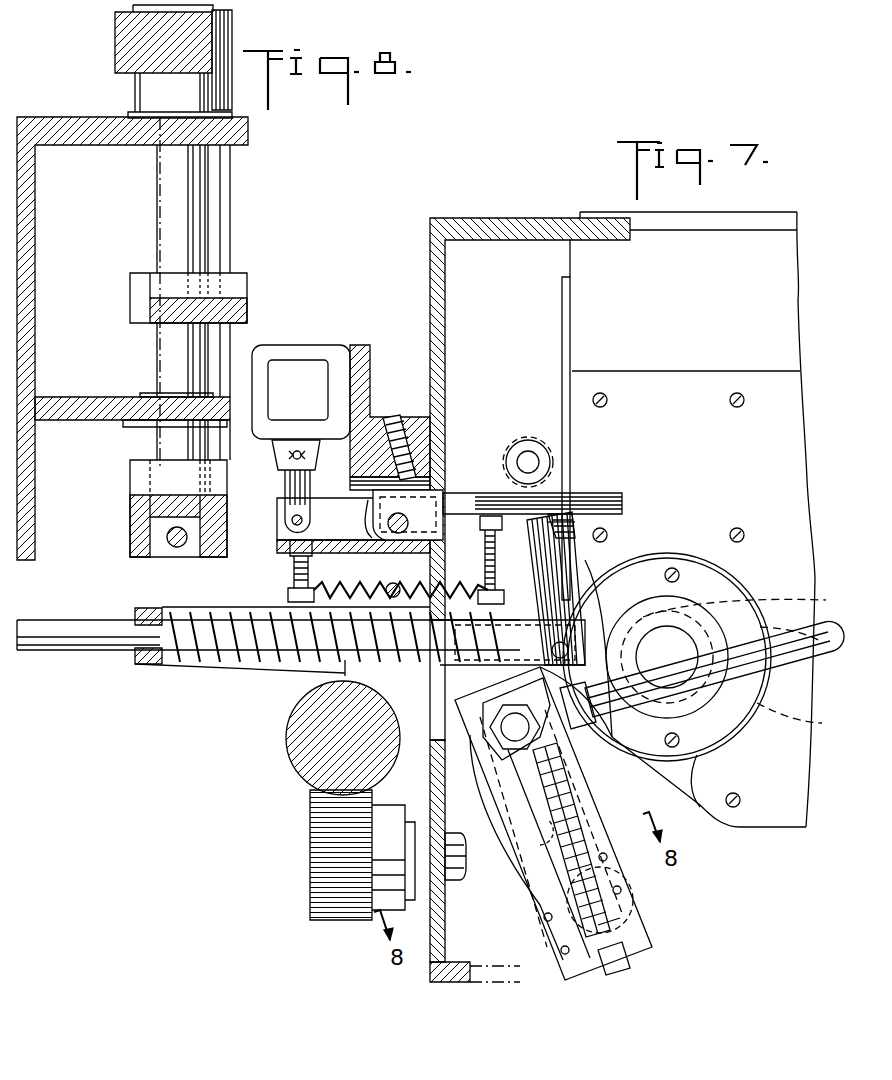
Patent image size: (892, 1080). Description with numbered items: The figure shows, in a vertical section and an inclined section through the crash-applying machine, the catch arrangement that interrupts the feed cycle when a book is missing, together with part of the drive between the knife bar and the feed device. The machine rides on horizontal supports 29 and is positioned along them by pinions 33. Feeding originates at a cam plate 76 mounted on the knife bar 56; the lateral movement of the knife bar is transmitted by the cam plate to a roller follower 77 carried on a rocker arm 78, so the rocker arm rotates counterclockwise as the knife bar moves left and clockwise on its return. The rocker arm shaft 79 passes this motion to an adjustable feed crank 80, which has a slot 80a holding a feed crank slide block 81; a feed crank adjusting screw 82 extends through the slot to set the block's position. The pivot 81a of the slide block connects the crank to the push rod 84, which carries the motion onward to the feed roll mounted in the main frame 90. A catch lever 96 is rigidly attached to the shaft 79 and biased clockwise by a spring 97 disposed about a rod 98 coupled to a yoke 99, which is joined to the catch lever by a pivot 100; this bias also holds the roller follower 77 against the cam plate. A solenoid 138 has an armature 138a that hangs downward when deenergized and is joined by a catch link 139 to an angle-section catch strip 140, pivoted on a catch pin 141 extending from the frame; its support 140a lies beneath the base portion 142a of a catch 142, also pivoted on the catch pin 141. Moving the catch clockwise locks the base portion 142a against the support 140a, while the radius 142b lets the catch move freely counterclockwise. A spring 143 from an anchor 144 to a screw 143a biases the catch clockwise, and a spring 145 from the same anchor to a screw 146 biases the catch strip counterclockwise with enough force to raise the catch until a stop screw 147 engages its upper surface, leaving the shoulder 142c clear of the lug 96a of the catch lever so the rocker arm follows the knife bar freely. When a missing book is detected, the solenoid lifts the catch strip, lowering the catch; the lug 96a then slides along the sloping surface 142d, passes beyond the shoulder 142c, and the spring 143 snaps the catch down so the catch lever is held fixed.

In FIG. 7, the horizontal supports 29 is at (290, 770).
In FIG. 7, the pinions 33 is at (312, 880).
In FIG. 7, the knife bar 56 is at (578, 262).
In FIG. 7, the cam plate 76 is at (562, 312).
In FIG. 7, the roller follower 77 is at (536, 442).
In FIG. 8, the rocker arm 78 is at (125, 52).
In FIG. 7, the rocker arm 78 is at (520, 587).
In FIG. 8, the rocker arm shaft 79 is at (205, 210).
In FIG. 7, the rocker arm shaft 79 is at (612, 920).
In FIG. 8, the adjustable feed crank 80 is at (135, 522).
In FIG. 7, the adjustable feed crank 80 is at (640, 938).
In FIG. 7, the slot 80a is at (540, 830).
In FIG. 7, the feed crank slide block 81 is at (482, 770).
In FIG. 7, the pivot 81a is at (510, 727).
In FIG. 8, the feed crank adjusting screw 82 is at (177, 548).
In FIG. 7, the feed crank adjusting screw 82 is at (560, 805).
In FIG. 7, the push rod 84 is at (790, 656).
In FIG. 7, the main frame 90 is at (428, 220).
In FIG. 7, the catch lever 96 is at (582, 550).
In FIG. 7, the lug 96a is at (527, 527).
In FIG. 7, the spring 97 is at (240, 652).
In FIG. 7, the rod 98 is at (98, 628).
In FIG. 7, the yoke 99 is at (505, 630).
In FIG. 7, the pivot 100 is at (568, 645).
In FIG. 7, the solenoid 138 is at (322, 400).
In FIG. 7, the armature 138a is at (282, 456).
In FIG. 7, the catch link 139 is at (284, 485).
In FIG. 7, the catch strip 140 is at (352, 531).
In FIG. 7, the support 140a is at (285, 556).
In FIG. 7, the catch pin 141 is at (405, 520).
In FIG. 7, the catch 142 is at (608, 498).
In FIG. 7, the base portion 142a is at (415, 535).
In FIG. 7, the radius 142b is at (368, 500).
In FIG. 7, the shoulder 142c is at (572, 514).
In FIG. 7, the sloping surface 142d is at (614, 516).
In FIG. 7, the spring 143 is at (483, 566).
In FIG. 7, the screw 143a is at (484, 533).
In FIG. 7, the anchor 144 is at (392, 585).
In FIG. 7, the spring 145 is at (345, 590).
In FIG. 7, the screw 146 is at (290, 584).
In FIG. 7, the stop screw 147 is at (410, 455).